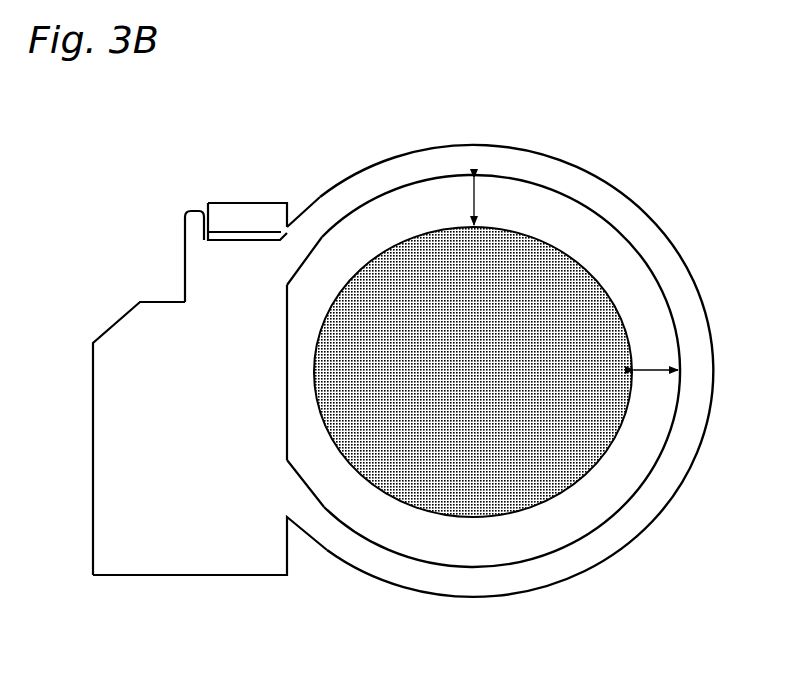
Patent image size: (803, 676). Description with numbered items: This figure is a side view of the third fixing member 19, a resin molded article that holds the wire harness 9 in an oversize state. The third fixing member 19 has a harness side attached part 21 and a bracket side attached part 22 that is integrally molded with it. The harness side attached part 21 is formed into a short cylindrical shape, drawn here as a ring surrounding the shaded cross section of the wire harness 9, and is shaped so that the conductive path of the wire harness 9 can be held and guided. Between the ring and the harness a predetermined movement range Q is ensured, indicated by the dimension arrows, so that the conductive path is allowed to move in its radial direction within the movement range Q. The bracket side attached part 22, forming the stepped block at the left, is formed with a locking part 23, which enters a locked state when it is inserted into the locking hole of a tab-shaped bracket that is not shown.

The third fixing member 19 is at (163, 203).
The harness side attached part 21 is at (387, 158).
The bracket side attached part 22 is at (168, 552).
The locking part 23 is at (138, 392).
The wire harness 9 is at (533, 508).
The movement range Q is at (474, 201).